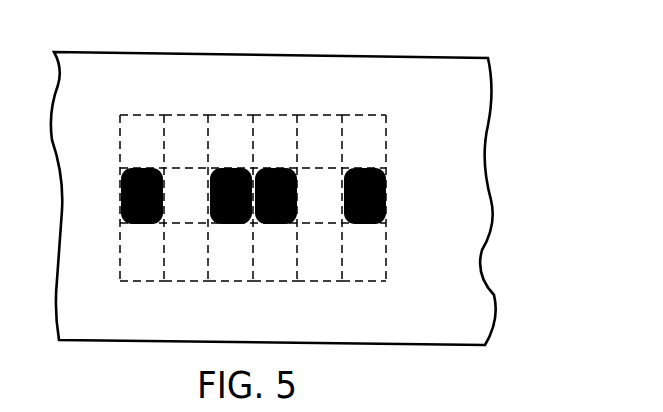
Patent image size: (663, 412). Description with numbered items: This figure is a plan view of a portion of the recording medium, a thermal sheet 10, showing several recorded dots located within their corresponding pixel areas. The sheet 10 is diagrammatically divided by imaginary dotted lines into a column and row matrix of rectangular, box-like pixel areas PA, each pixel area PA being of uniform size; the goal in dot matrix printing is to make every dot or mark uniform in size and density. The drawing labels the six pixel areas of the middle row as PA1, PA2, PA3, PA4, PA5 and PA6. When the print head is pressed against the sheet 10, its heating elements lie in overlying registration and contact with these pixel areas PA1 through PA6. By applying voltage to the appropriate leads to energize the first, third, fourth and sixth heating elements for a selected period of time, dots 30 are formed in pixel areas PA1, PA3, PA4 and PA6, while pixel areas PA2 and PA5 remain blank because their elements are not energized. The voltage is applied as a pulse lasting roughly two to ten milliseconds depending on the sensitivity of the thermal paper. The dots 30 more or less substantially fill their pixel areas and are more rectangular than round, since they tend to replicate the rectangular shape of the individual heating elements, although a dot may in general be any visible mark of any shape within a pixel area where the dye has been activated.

The thermal sheet 10 is at (491, 57).
The pixel areas PA is at (181, 113).
The first pixel area of the middle row PA1 is at (139, 168).
The second pixel area of the middle row PA2 is at (184, 173).
The third pixel area of the middle row PA3 is at (229, 168).
The fourth pixel area of the middle row PA4 is at (274, 170).
The fifth pixel area of the middle row PA5 is at (317, 173).
The sixth pixel area of the middle row PA6 is at (362, 168).
The dots 30 is at (143, 224).